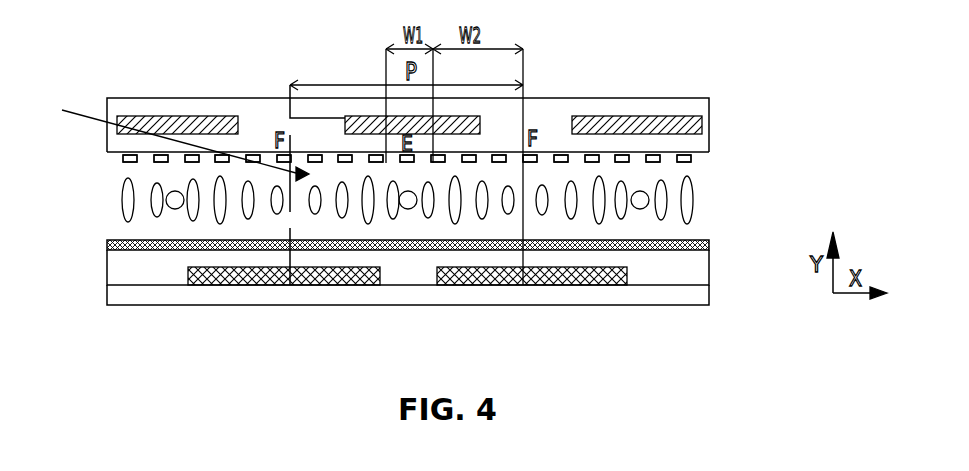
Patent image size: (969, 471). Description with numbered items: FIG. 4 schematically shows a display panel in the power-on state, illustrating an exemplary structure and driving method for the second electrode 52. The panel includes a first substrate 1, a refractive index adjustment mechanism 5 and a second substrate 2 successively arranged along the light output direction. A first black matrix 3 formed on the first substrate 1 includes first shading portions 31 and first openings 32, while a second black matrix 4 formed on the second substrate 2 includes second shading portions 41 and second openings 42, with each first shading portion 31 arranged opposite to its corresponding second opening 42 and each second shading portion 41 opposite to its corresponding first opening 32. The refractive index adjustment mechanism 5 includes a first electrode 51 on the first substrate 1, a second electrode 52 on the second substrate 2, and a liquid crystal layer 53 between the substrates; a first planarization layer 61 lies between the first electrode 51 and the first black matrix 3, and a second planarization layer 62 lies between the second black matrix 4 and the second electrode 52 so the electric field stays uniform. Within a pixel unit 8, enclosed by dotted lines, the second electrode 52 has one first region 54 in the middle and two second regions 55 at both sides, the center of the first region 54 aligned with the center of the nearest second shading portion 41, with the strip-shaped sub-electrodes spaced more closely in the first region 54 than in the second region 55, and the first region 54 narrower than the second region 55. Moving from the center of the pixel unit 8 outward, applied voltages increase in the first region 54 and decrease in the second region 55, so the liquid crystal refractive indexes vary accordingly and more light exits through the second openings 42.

The first substrate 1 is at (663, 296).
The second substrate 2 is at (683, 108).
The first black matrix 3 is at (508, 235).
The first shading portion 31 is at (577, 267).
The first opening 32 is at (403, 270).
The second black matrix 4 is at (466, 160).
The second shading portion 41 is at (537, 127).
The second opening 42 is at (537, 127).
The refractive index adjustment mechanism 5 is at (359, 203).
The first electrode 51 is at (376, 245).
The second electrode 52 is at (122, 159).
The liquid crystal layer 53 is at (122, 203).
The first region 54 is at (415, 150).
The second region 55 is at (480, 145).
The first planarization layer 61 is at (663, 258).
The second planarization layer 62 is at (702, 124).
The pixel unit 8 is at (176, 138).